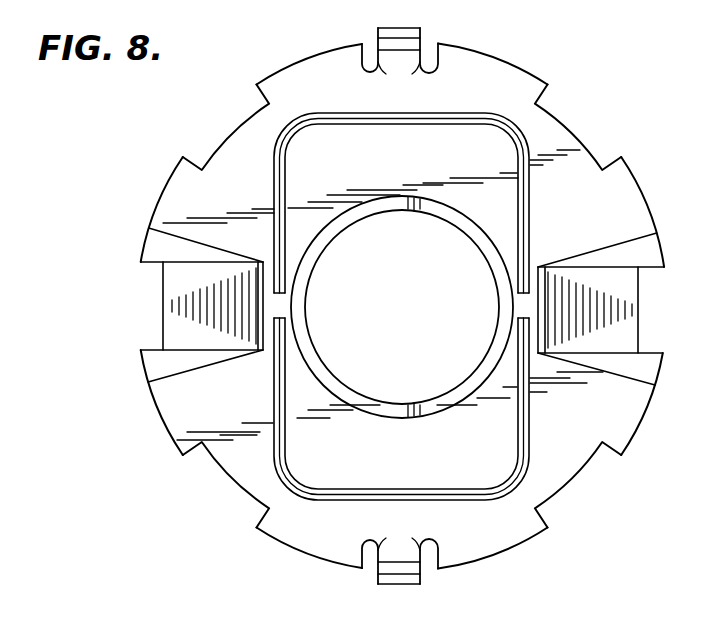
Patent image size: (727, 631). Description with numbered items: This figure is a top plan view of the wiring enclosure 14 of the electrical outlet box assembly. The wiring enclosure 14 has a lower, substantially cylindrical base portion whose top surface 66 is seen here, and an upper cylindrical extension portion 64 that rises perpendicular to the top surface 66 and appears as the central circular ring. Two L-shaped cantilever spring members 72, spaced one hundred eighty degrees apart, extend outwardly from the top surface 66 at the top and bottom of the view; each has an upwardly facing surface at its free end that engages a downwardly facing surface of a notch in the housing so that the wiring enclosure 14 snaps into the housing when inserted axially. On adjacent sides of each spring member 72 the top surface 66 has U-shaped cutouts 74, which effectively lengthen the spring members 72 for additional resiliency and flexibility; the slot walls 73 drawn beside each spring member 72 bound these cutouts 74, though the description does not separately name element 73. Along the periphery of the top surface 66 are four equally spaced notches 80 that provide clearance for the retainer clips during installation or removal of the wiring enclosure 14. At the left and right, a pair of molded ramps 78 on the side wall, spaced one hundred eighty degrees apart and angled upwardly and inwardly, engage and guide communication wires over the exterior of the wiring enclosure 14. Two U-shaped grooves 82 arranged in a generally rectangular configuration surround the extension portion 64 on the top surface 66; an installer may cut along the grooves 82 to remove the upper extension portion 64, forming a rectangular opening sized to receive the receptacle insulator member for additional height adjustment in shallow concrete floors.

The wiring enclosure 14 is at (152, 150).
The upper cylindrical extension portion 64 is at (398, 196).
The top surface 66 is at (618, 195).
The L-shaped cantilever spring member 72 is at (420, 28).
The slot 73 is at (377, 33).
The U-shaped cutout 74 is at (414, 67).
The molded ramp 78 is at (165, 309).
The notch 80 is at (221, 128).
The U-shaped groove 82 is at (376, 127).